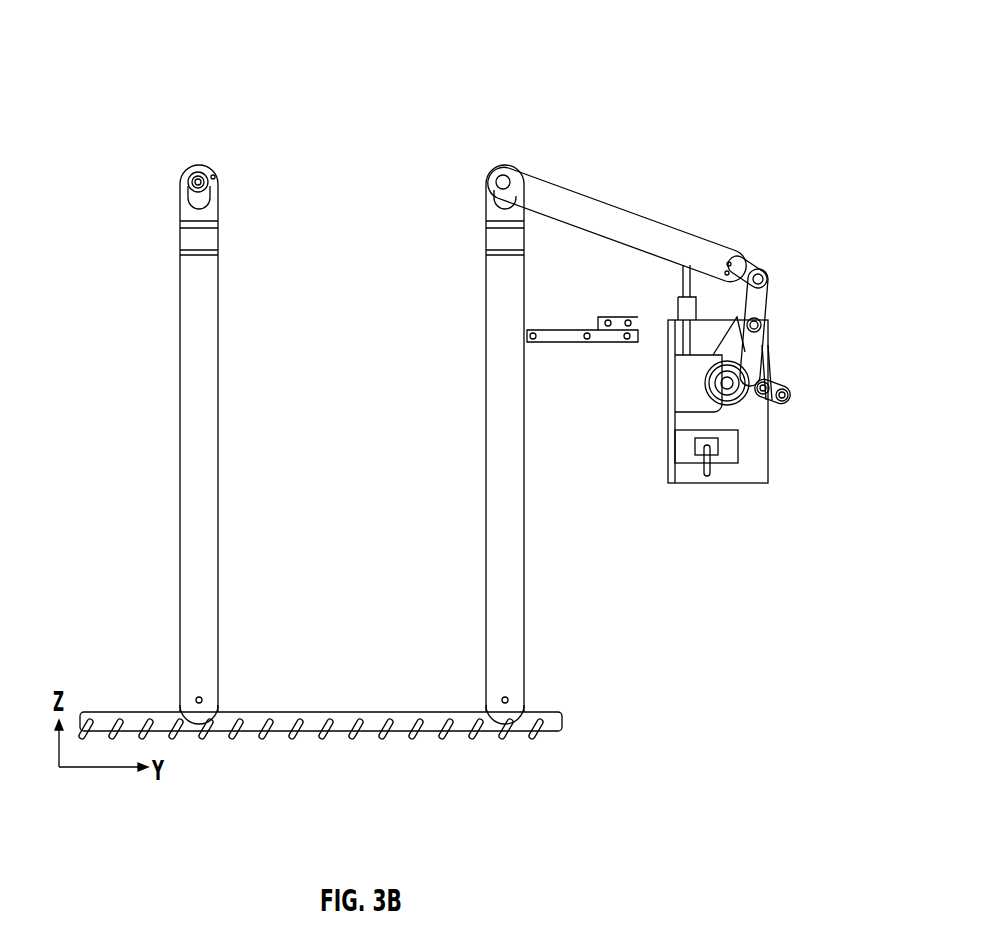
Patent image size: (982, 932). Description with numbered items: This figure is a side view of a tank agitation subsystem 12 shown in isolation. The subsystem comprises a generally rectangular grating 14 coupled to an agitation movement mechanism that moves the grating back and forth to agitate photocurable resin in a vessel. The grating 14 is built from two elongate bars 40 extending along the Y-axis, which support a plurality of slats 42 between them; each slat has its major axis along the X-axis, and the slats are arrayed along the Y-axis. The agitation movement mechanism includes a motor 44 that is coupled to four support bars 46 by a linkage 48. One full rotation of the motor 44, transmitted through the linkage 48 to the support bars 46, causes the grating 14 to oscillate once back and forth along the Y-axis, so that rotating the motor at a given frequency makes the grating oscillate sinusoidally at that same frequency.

The tank agitation subsystem 12 is at (613, 98).
The grating 14 is at (582, 722).
The elongate bars 40 is at (328, 714).
The slats 42 is at (368, 730).
The motor 44 is at (684, 398).
The support bars 46 is at (194, 306).
The linkage 48 is at (750, 267).